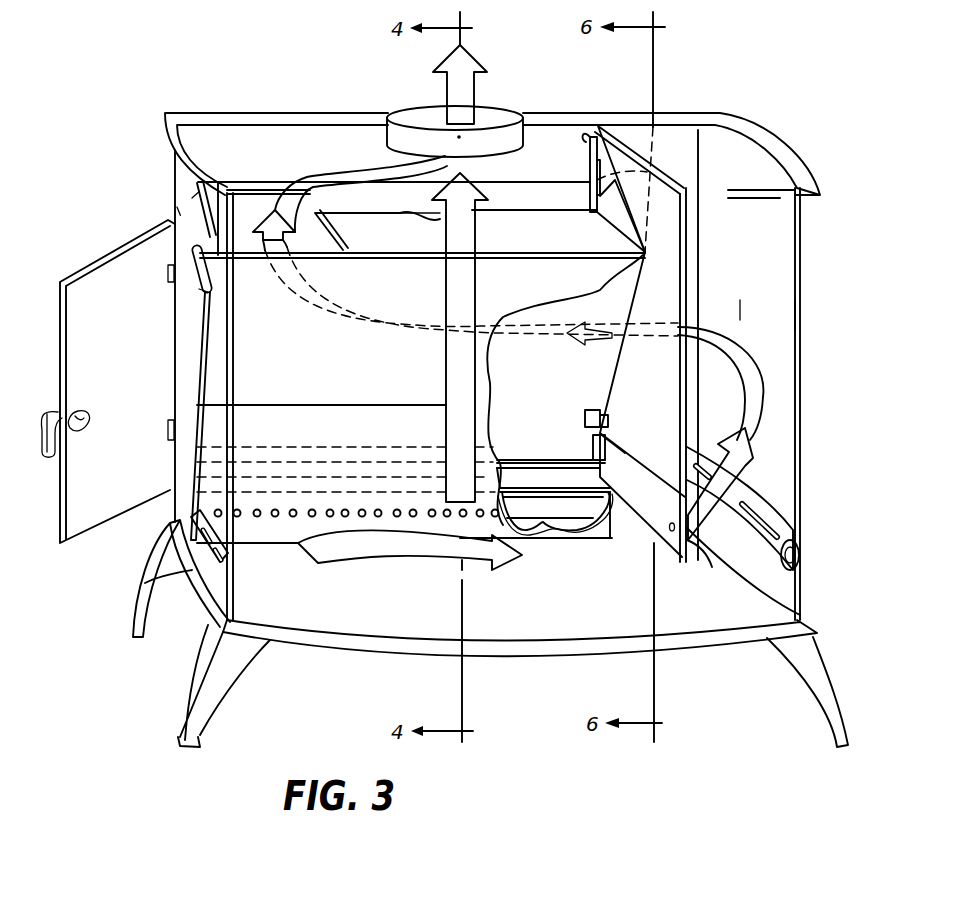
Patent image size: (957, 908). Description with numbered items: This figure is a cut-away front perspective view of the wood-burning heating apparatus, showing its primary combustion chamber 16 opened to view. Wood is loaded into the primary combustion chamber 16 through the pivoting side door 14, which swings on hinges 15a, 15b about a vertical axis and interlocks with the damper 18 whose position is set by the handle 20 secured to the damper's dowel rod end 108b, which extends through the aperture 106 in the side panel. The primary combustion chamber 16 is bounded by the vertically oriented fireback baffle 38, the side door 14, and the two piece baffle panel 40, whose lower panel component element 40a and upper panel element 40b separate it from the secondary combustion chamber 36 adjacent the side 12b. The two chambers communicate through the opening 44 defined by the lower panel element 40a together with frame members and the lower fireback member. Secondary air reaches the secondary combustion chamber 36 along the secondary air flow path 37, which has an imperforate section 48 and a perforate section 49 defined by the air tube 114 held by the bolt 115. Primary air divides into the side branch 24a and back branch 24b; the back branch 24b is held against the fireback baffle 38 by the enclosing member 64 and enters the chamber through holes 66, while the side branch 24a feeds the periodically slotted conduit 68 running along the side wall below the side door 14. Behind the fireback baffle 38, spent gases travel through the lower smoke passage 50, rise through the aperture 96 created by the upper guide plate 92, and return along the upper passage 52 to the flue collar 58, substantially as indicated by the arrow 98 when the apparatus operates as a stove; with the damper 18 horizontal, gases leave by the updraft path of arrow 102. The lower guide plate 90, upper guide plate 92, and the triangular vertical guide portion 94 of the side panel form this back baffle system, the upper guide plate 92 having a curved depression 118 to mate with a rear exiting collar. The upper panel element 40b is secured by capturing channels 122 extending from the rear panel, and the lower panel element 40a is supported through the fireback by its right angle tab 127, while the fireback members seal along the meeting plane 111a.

The side 12b is at (801, 268).
The pivoting side door 14 is at (112, 495).
The hinge 15a is at (168, 270).
The hinge 15b is at (168, 432).
The primary combustion chamber 16 is at (342, 367).
The damper 18 is at (521, 181).
The handle 20 is at (196, 289).
The primary air supply path (side branch) 24a is at (197, 537).
The primary air supply path (back branch) 24b is at (512, 508).
The secondary combustion chamber 36 is at (780, 436).
The secondary air flow path 37 is at (508, 468).
The fireback baffle 38 is at (192, 342).
The interior two piece baffle panel 40 is at (694, 371).
The lower panel component element 40a is at (707, 571).
The upper panel element 40b is at (682, 290).
The opening 44 is at (625, 534).
The imperforate section 48 is at (541, 487).
The perforate section 49 is at (796, 556).
The smoke passage 50 is at (567, 383).
The upper channel or passage 52 is at (300, 136).
The flue collar 58 is at (496, 104).
The enclosing member 64 is at (603, 481).
The holes 66 is at (411, 518).
The periodically slotted conduit 68 is at (220, 573).
The lower guide plate 90 is at (528, 450).
The upper guide plate 92 is at (400, 242).
The vertical guide portion 94 is at (180, 373).
The aperture 96 is at (314, 239).
The arrow 98 is at (320, 167).
The arrow 102 is at (474, 239).
The second aperture 106 is at (221, 245).
The dowel rod type end 108b is at (212, 244).
The meeting plane 111a is at (418, 405).
The air tube 114 is at (793, 524).
The bolt 115 is at (742, 502).
The curved depression 118 is at (406, 220).
The capturing channels 122 is at (591, 142).
The right angle tab 127 is at (607, 443).